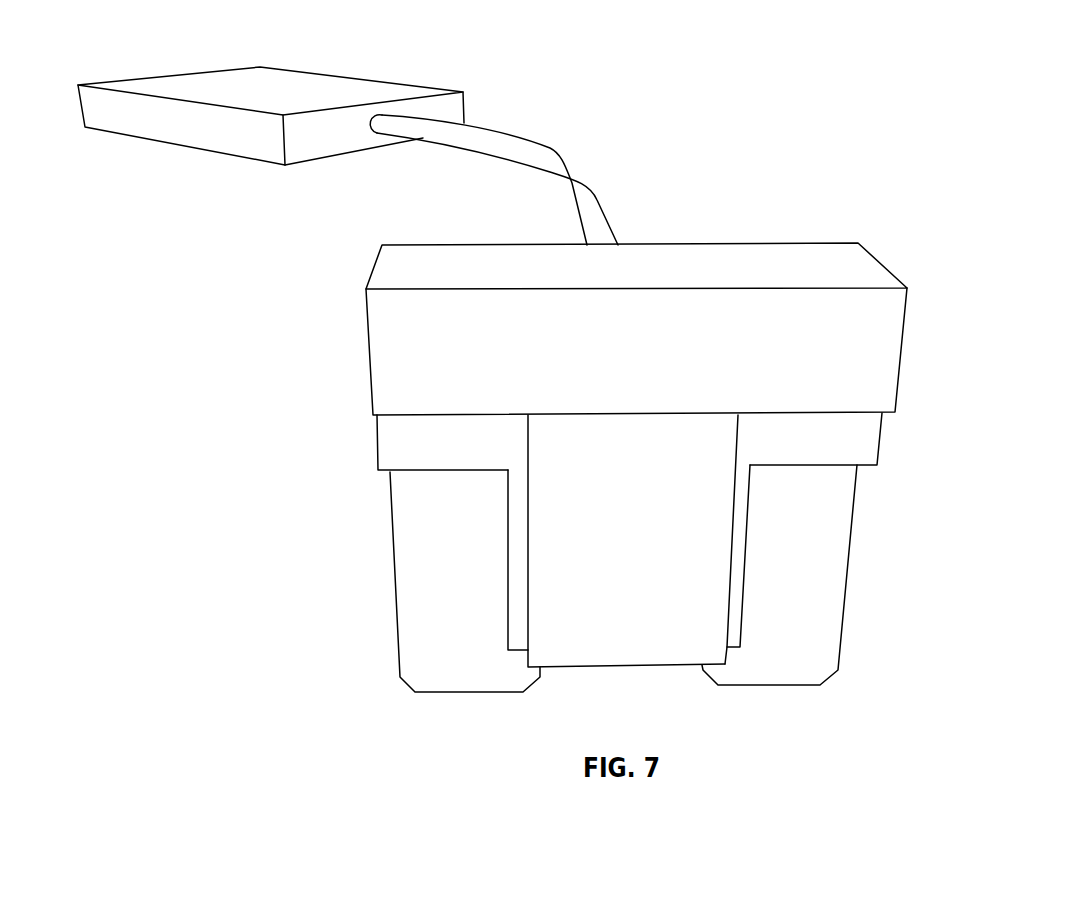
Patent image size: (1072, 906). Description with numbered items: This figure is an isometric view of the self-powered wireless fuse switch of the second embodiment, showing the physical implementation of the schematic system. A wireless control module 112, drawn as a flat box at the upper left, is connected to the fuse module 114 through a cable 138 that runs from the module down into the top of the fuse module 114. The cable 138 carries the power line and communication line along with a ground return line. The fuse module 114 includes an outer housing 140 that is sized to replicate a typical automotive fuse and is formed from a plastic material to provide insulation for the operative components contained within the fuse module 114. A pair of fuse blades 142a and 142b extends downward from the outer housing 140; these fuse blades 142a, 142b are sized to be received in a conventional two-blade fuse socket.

The wireless control module 112 is at (343, 73).
The cable 138 is at (555, 168).
The fuse module 114 is at (654, 467).
The outer housing 140 is at (380, 355).
The fuse blade 142a is at (827, 565).
The fuse blade 142b is at (420, 568).